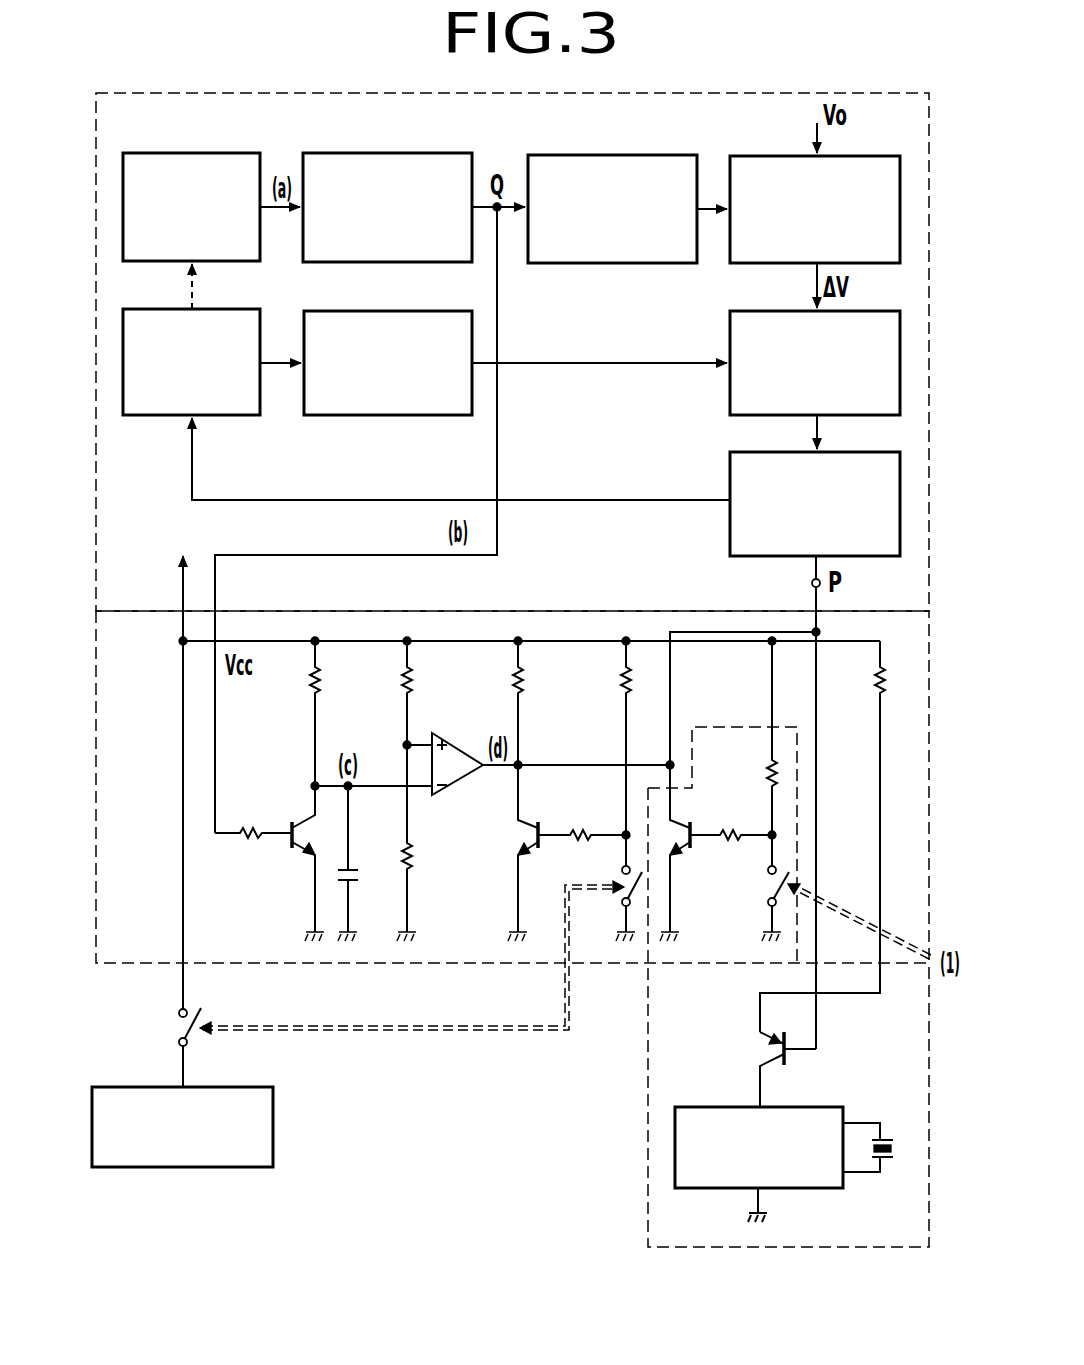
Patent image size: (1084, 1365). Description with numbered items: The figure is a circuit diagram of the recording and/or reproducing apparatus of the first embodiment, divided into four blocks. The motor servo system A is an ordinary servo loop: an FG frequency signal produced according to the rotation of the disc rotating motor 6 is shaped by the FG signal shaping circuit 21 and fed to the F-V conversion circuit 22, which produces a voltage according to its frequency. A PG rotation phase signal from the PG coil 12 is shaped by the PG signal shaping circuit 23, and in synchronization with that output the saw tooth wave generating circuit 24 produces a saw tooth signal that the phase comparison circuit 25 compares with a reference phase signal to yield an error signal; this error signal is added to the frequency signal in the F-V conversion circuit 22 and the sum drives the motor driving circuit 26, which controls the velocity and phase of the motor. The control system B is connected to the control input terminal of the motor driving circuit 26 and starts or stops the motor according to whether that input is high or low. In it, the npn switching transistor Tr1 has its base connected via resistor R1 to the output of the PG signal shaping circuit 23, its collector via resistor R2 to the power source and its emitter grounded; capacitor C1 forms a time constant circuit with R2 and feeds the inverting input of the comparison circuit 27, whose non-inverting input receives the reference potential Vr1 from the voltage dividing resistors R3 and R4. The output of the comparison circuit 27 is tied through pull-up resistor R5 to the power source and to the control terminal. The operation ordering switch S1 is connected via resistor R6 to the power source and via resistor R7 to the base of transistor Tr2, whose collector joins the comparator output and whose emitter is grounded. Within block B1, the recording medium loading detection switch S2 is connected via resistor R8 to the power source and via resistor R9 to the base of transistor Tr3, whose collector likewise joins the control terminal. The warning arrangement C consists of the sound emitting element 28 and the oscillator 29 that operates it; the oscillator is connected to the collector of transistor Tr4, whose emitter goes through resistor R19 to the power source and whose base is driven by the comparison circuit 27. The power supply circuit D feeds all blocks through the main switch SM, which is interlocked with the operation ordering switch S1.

The PG coil 12 is at (218, 152).
The PG signal shaping circuit 23 is at (423, 153).
The saw tooth wave generating circuit 24 is at (640, 155).
The phase comparison circuit 25 is at (852, 156).
The disc rotating motor 6 is at (237, 308).
The FG signal shaping circuit 21 is at (437, 311).
The F-V conversion circuit 22 is at (875, 311).
The motor driving circuit 26 is at (730, 470).
The comparison circuit 27 is at (453, 788).
The sound emitting element 28 is at (892, 1160).
The oscillator 29 is at (807, 1190).
The motor servo system A is at (782, 93).
The control system B is at (932, 660).
The block B1 is at (712, 727).
The warning arrangement C is at (722, 1250).
The power supply circuit D is at (145, 1168).
The main switch SM is at (180, 1030).
The operation ordering switch S1 is at (620, 893).
The recording medium loading detection switch S2 is at (767, 887).
The resistor R1 is at (248, 827).
The resistor R2 is at (323, 685).
The voltage dividing resistor R3 is at (415, 685).
The voltage dividing resistor R4 is at (409, 855).
The pull-up resistor R5 is at (525, 684).
The resistor R6 is at (623, 683).
The resistor R7 is at (583, 823).
The resistor R8 is at (767, 768).
The resistor R9 is at (725, 827).
The resistor R19 is at (877, 687).
The reference potential Vr1 is at (403, 745).
The capacitor C1 is at (360, 877).
The npn switching transistor Tr1 is at (293, 847).
The npn switching transistor Tr2 is at (538, 852).
The npn switching transistor Tr3 is at (688, 850).
The npn switching transistor Tr4 is at (775, 1060).